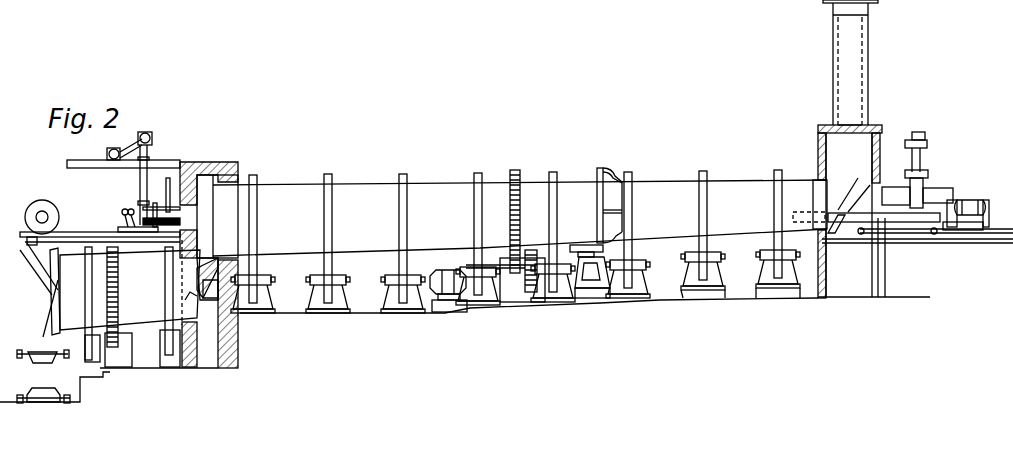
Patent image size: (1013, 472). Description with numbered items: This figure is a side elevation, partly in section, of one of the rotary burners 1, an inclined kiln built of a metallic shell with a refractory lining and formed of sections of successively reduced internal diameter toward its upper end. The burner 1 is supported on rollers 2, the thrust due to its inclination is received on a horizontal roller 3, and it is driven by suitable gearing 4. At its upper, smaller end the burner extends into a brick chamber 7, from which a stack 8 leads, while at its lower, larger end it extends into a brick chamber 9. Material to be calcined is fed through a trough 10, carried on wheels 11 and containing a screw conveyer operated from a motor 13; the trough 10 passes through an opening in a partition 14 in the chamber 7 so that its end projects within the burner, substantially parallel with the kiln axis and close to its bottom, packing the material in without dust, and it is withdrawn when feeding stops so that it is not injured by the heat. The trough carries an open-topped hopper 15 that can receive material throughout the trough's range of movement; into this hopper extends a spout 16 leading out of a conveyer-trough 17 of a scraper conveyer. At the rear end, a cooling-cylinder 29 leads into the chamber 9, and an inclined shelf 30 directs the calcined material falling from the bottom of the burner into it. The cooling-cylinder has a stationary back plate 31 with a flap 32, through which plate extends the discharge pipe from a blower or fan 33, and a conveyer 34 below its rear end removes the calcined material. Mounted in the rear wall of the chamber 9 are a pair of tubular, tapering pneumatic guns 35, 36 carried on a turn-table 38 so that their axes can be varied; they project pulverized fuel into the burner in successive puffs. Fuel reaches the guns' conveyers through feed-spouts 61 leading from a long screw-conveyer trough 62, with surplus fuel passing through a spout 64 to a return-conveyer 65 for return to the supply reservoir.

The rotary burner 1 is at (650, 183).
The rollers 2 is at (338, 292).
The horizontal roller 3 is at (583, 250).
The gearing 4 is at (514, 246).
The brick chamber 7 is at (820, 168).
The stack 8 is at (853, 62).
The chamber 9 is at (209, 255).
The trough 10 is at (852, 217).
The wheels 11 is at (861, 234).
The motor 13 is at (972, 200).
The partition 14 is at (858, 182).
The hopper 15 is at (935, 193).
The spout 16 is at (908, 190).
The conveyer-trough 17 is at (924, 176).
The cooling-cylinder 29 is at (139, 304).
The inclined shelf 30 is at (212, 265).
The stationary back plate 31 is at (52, 290).
The flap 32 is at (50, 318).
The blower or fan 33 is at (100, 220).
The conveyer 34 is at (55, 376).
The pneumatic gun 35 is at (167, 215).
The pneumatic gun 36 is at (155, 205).
The turn-table 38 is at (120, 228).
The feed-spout 61 is at (140, 184).
The screw-conveyer trough 62 is at (155, 137).
The spout 64 is at (134, 146).
The return-conveyer 65 is at (102, 152).